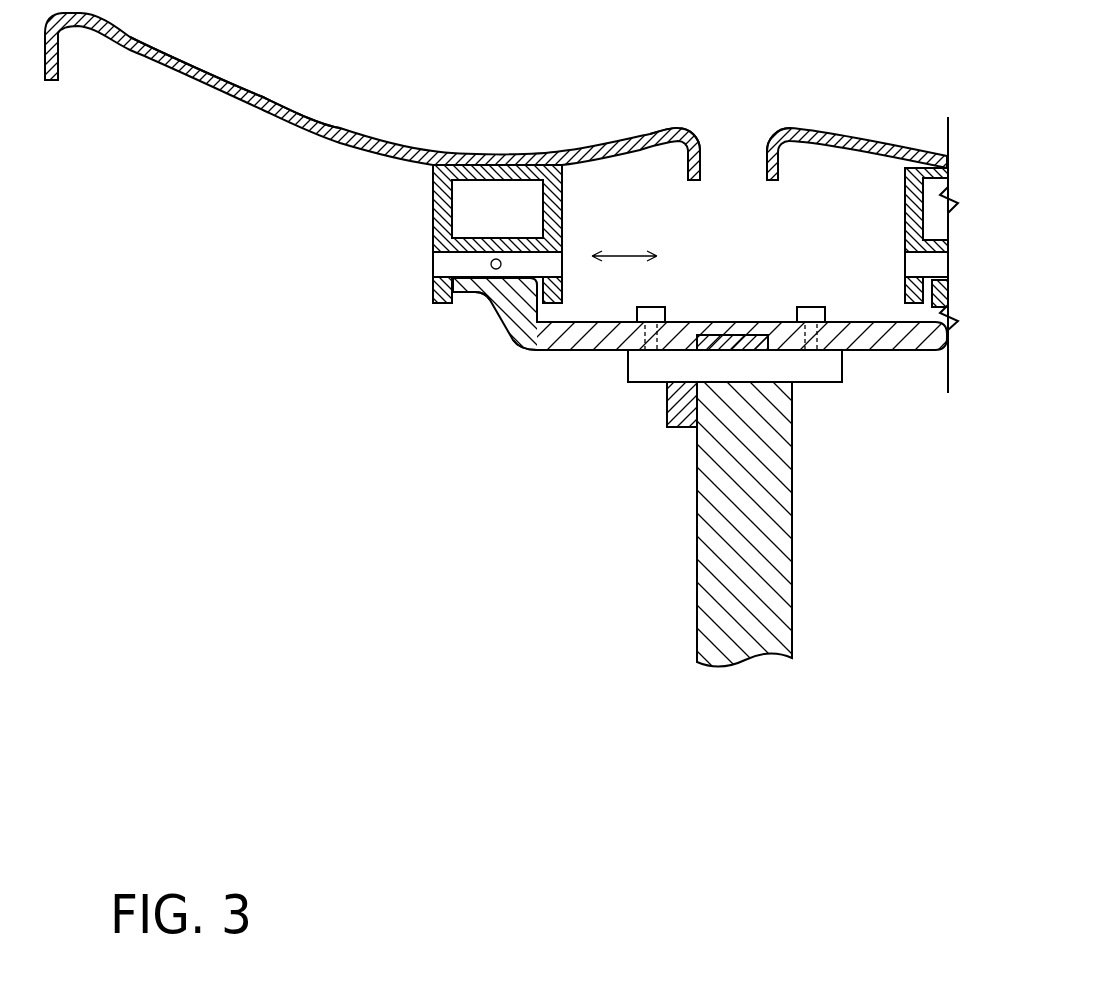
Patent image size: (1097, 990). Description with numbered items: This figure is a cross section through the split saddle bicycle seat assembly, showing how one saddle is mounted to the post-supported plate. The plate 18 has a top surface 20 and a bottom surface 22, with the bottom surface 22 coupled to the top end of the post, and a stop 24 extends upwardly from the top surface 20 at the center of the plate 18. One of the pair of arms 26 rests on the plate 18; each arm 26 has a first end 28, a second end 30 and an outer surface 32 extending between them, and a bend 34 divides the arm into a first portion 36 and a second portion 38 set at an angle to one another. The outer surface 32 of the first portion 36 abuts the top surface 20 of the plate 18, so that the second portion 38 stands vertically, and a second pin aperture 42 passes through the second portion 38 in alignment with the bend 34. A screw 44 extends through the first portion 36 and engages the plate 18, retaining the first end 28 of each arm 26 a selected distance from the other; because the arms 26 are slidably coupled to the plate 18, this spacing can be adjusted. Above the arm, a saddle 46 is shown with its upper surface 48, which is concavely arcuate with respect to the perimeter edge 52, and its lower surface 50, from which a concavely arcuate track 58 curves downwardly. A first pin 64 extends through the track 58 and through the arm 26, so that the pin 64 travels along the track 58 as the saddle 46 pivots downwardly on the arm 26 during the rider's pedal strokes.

The plate 18 is at (628, 380).
The top surface 20 is at (668, 345).
The bottom surface 22 is at (647, 387).
The stop 24 is at (745, 337).
The arms 26 is at (597, 352).
The first end 28 is at (735, 323).
The second end 30 is at (495, 237).
The outer surface 32 is at (513, 347).
The bend 34 is at (505, 346).
The first portion 36 is at (607, 318).
The second portion 38 is at (490, 312).
The second pin aperture 42 is at (458, 265).
The screws 44 is at (810, 307).
The saddles 46 is at (778, 130).
The upper surface 48 is at (262, 117).
The lower surface 50 is at (262, 117).
The perimeter edge 52 is at (45, 83).
The tracks 58 is at (432, 190).
The first pins 64 is at (547, 265).